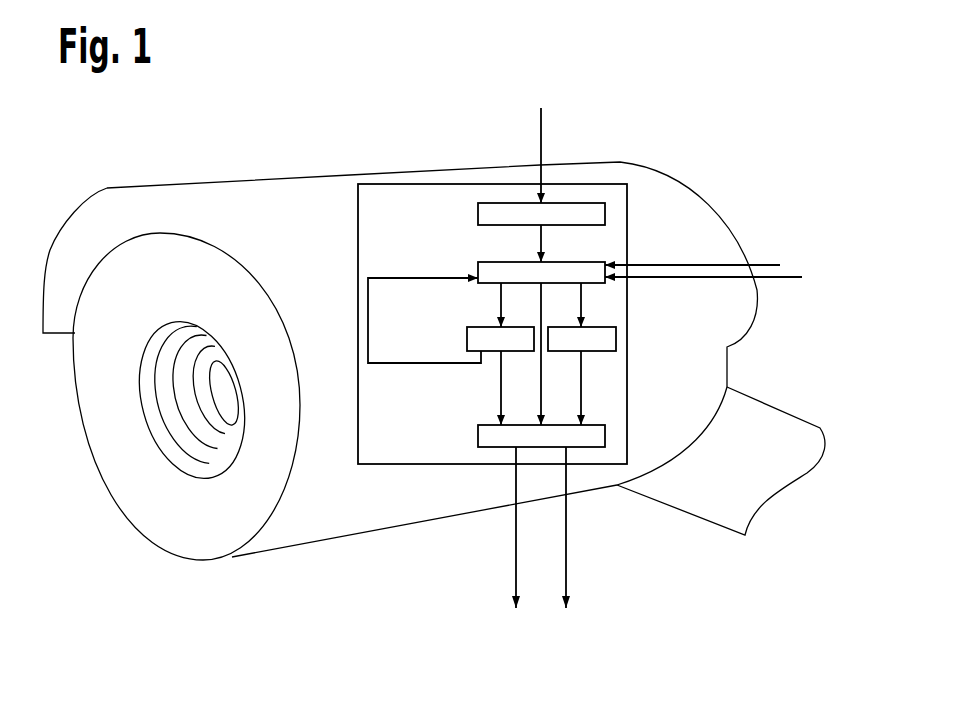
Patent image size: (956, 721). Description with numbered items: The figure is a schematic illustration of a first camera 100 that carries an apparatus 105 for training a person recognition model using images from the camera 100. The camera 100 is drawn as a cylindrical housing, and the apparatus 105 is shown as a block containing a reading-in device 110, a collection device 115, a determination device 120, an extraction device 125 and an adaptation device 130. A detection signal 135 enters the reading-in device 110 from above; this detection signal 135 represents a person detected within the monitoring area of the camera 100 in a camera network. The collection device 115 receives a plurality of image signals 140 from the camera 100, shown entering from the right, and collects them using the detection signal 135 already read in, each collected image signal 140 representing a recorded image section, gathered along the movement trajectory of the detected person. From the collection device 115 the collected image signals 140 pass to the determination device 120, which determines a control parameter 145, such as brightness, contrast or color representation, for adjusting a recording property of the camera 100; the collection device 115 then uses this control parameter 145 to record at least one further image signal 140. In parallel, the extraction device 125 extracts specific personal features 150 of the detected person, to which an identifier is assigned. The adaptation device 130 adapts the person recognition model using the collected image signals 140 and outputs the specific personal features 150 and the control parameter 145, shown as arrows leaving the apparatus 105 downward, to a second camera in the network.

The camera 100 is at (245, 190).
The apparatus 105 is at (448, 184).
The reading-in device 110 is at (478, 214).
The collection device 115 is at (478, 270).
The determination device 120 is at (467, 340).
The extraction device 125 is at (617, 341).
The adaptation device 130 is at (478, 433).
The detection signal 135 is at (543, 116).
The image signals 140 is at (499, 303).
The control parameter 145 is at (368, 289).
The specific personal features 150 is at (583, 387).